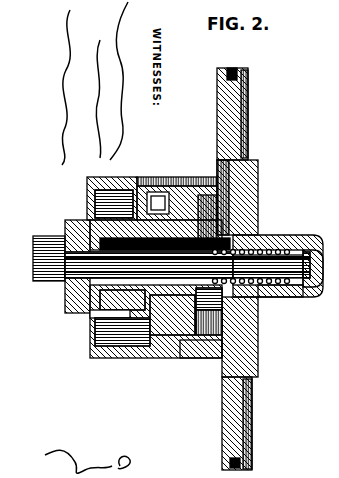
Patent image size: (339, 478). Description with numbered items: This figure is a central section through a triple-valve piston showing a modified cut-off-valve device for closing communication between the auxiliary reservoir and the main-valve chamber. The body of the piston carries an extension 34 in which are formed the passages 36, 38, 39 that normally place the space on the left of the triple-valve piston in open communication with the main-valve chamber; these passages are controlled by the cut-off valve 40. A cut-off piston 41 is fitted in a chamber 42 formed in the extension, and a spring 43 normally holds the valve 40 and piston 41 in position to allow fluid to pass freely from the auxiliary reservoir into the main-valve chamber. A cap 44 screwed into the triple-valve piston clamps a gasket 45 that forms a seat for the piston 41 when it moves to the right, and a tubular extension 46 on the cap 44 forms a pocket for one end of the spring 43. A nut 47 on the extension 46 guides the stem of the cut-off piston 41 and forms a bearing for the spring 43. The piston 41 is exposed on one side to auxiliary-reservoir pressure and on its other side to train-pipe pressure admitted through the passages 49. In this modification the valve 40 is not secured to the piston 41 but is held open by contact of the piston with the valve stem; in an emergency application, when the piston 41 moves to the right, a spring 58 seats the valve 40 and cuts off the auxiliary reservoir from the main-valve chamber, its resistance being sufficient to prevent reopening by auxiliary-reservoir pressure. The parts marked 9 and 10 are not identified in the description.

The spindle 9 is at (248, 410).
The shaft 10 is at (171, 258).
The extension 34 is at (130, 358).
The passage 36 is at (183, 178).
The passage 38 is at (122, 302).
The passage 39 is at (100, 317).
The cut-off valve 40 is at (172, 315).
The cut-off piston 41 is at (213, 322).
The chamber 42 is at (212, 299).
The spring 43 is at (288, 250).
The cap 44 is at (258, 350).
The gasket 45 is at (218, 355).
The tubular extension 46 is at (258, 300).
The nut 47 is at (312, 298).
The passages 49 is at (250, 235).
The spring 58 is at (77, 266).